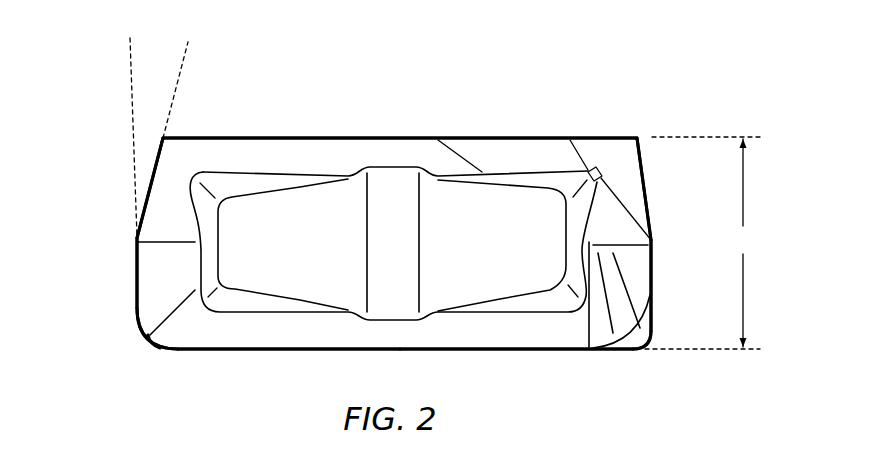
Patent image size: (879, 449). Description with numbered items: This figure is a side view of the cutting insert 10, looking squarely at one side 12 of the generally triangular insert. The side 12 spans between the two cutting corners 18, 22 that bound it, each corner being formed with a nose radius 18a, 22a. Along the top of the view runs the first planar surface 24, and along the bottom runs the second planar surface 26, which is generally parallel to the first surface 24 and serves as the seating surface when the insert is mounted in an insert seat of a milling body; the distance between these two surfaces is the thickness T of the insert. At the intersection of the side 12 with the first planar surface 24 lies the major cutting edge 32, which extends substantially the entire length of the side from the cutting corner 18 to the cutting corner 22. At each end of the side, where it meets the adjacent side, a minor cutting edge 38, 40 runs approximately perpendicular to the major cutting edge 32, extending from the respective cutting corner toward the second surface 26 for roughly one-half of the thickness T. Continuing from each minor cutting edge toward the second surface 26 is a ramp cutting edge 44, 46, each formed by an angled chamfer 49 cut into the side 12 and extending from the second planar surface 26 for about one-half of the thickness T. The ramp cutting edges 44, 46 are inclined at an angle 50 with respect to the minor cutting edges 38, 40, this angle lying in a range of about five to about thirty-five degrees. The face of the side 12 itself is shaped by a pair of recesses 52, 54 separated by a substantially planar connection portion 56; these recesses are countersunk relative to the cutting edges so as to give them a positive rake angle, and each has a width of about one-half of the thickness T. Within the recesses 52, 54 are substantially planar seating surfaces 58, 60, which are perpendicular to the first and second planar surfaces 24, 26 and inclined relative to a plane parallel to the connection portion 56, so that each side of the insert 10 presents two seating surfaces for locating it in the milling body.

The cutting insert 10 is at (722, 62).
The side 12 is at (242, 169).
The cutting corner 18 is at (137, 343).
The nose radius 18a is at (147, 350).
The cutting corner 22 is at (643, 350).
The nose radius 22a is at (640, 350).
The first planar surface 24 is at (520, 349).
The second planar surface 26 is at (502, 138).
The major cutting edge 32 is at (295, 349).
The minor cutting edge 38 is at (137, 283).
The minor cutting edge 40 is at (650, 293).
The ramp cutting edge 44 is at (153, 173).
The ramp cutting edge 46 is at (648, 188).
The angled chamfer 49 is at (612, 152).
The angle 50 is at (185, 52).
The recess 52 is at (277, 218).
The recess 54 is at (528, 220).
The connection portion 56 is at (393, 205).
The seating surface 58 is at (303, 228).
The seating surface 60 is at (481, 232).
The thickness T is at (702, 243).